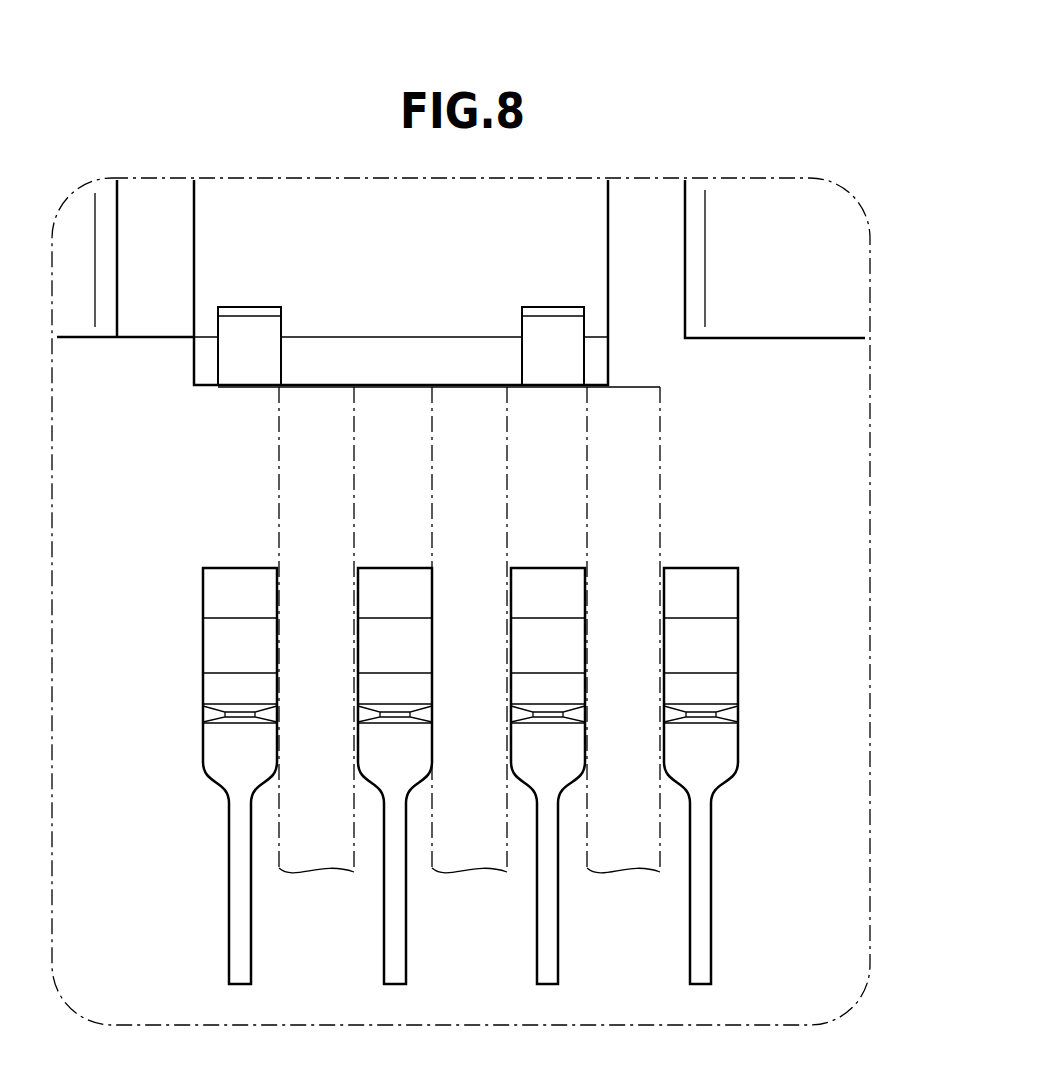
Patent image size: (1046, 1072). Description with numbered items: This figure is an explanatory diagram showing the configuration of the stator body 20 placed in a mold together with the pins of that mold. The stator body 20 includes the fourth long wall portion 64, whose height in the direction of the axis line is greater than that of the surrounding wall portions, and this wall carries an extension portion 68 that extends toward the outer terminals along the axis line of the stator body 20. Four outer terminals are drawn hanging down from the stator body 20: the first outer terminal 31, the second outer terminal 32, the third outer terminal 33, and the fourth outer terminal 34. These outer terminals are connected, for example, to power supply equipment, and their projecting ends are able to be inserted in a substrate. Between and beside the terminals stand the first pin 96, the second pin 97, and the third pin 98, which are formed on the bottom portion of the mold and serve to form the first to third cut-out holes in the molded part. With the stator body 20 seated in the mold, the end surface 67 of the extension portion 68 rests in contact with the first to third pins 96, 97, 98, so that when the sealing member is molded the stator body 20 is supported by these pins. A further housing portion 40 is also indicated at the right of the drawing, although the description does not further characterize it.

The stator body 20 is at (742, 135).
The housing wall 40 is at (763, 341).
The fourth long wall portion 64 is at (382, 258).
The extension portion 68 is at (394, 356).
The end surface 67 is at (240, 388).
The third pin 98 is at (279, 476).
The second pin 97 is at (432, 476).
The first pin 96 is at (587, 476).
The fourth outer terminal 34 is at (229, 954).
The third outer terminal 33 is at (384, 954).
The second outer terminal 32 is at (537, 954).
The first outer terminal 31 is at (690, 954).